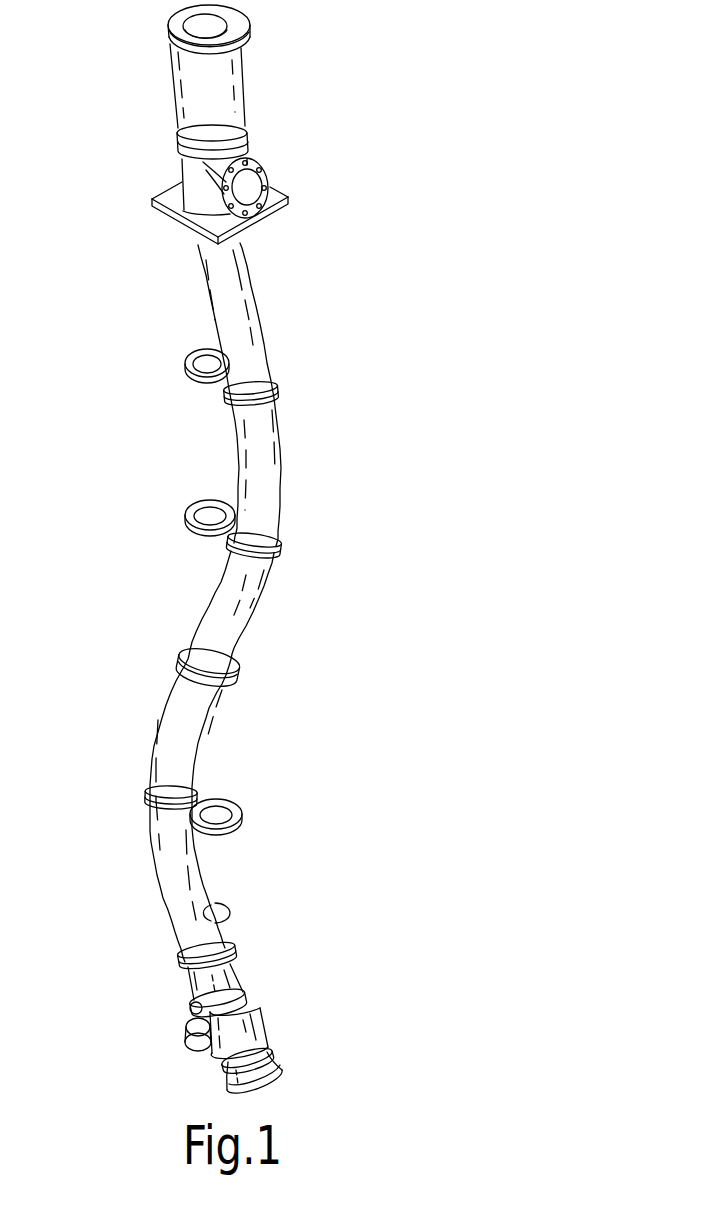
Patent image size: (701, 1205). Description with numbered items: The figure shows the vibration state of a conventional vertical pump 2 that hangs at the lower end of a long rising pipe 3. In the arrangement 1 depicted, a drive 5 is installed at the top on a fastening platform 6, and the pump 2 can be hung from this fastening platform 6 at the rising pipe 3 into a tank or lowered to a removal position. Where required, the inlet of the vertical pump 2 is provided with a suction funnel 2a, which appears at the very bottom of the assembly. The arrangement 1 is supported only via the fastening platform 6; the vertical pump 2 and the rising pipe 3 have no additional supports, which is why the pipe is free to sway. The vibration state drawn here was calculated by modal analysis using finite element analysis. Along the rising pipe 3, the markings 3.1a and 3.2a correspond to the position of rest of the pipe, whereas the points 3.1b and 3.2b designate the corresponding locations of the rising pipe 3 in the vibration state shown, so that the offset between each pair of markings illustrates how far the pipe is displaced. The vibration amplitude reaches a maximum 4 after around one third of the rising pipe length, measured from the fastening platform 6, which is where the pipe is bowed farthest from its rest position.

The arrangement 1 is at (396, 200).
The vertical pump 2 is at (240, 1025).
The suction funnel 2a is at (284, 1072).
The rising pipe 3 is at (183, 864).
The marking 3.1a is at (186, 516).
The point of the rising pipe in the vibration state 3.1b is at (279, 548).
The marking 3.2a is at (242, 808).
The point of the rising pipe in the vibration state 3.2b is at (146, 792).
The maximum of the vibration amplitude 4 is at (290, 480).
The drive 5 is at (225, 82).
The fastening platform 6 is at (280, 204).